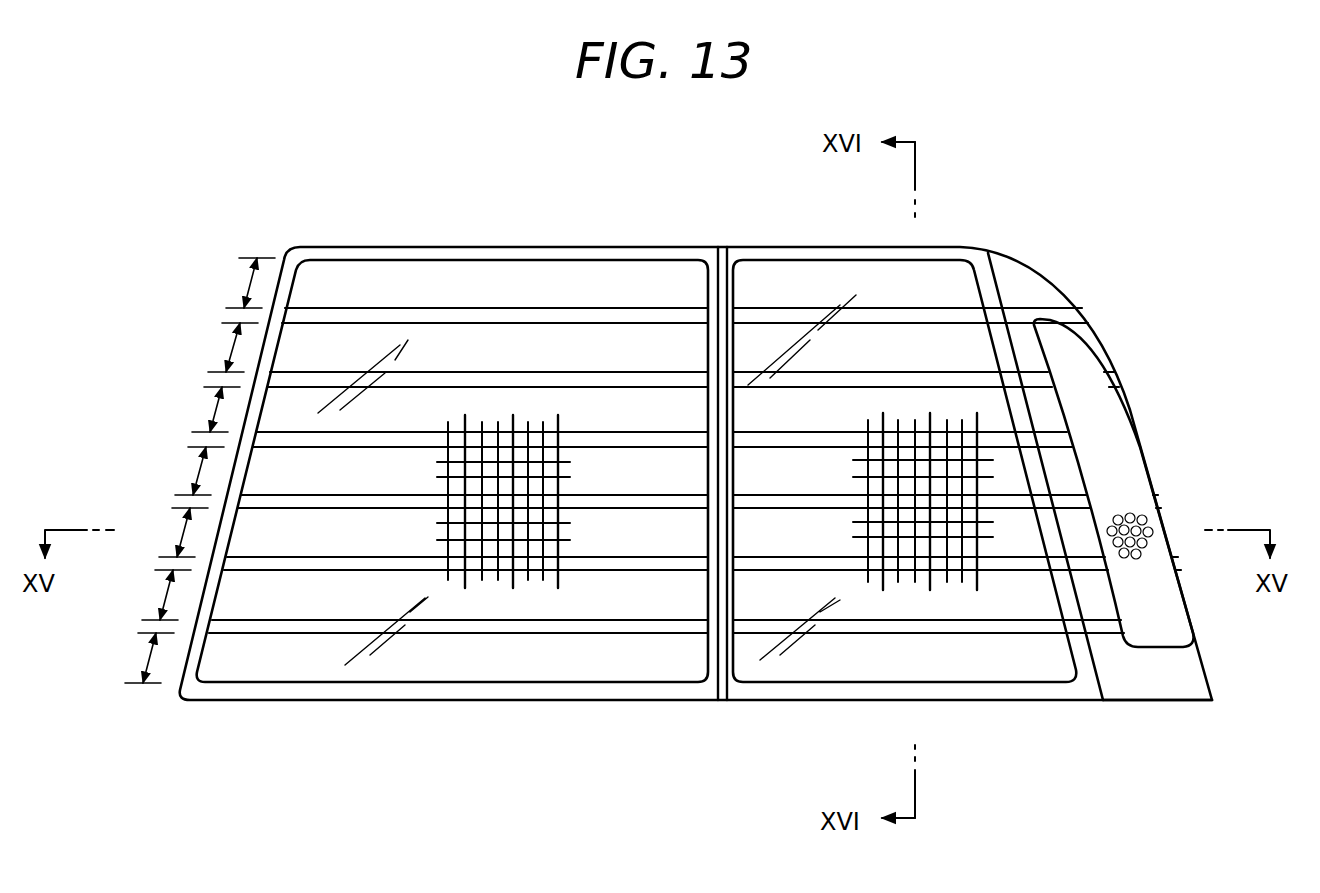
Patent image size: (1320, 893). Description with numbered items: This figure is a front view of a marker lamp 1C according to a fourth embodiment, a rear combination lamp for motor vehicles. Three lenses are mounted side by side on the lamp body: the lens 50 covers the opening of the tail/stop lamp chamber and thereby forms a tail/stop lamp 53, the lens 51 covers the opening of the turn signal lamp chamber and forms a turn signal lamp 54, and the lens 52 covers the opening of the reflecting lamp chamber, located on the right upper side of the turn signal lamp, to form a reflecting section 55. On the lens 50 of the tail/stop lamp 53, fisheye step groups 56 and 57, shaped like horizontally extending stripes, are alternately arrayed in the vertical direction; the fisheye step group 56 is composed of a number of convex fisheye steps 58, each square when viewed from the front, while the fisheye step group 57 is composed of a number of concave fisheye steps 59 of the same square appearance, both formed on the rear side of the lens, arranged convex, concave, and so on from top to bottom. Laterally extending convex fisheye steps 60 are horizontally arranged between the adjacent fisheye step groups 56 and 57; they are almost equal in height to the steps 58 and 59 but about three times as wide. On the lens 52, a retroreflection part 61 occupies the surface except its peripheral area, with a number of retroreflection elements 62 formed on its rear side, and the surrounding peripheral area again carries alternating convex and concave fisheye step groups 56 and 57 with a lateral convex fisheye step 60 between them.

The marker lamp 1C is at (1142, 198).
The lens 50 is at (463, 275).
The lens 51 is at (783, 272).
The lens 52 is at (1030, 287).
The tail/stop lamp 53 is at (392, 272).
The turn signal lamp 54 is at (945, 272).
The reflecting section 55 is at (1178, 684).
The fisheye step group 56 is at (245, 283).
The fisheye step group 57 is at (232, 350).
The convex fisheye step 58 is at (563, 530).
The concave fisheye step 59 is at (565, 467).
The convex fisheye step 60 is at (488, 425).
The retroreflection part 61 is at (1085, 378).
The retroreflection element 62 is at (1133, 507).